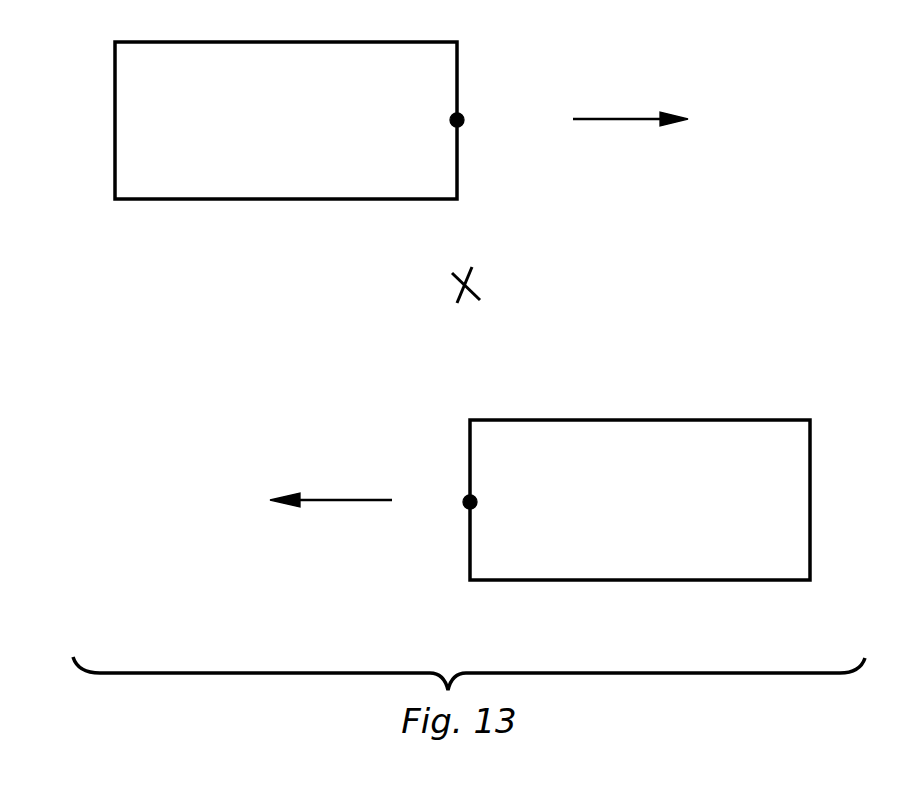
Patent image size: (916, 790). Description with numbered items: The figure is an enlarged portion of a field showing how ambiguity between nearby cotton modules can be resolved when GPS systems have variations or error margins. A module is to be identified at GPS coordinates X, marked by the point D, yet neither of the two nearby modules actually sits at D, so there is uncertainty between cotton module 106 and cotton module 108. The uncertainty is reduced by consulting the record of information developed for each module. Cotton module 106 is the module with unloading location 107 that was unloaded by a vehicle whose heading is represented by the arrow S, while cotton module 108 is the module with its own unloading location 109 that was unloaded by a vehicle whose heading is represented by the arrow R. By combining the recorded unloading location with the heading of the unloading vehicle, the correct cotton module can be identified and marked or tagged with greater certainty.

The cotton module 106 is at (640, 500).
The location 107 is at (463, 503).
The cotton module 108 is at (286, 120).
The point on member 108 109 is at (464, 121).
The arrow S is at (623, 121).
The arrow R is at (340, 498).
The GPS coordinates D is at (470, 283).